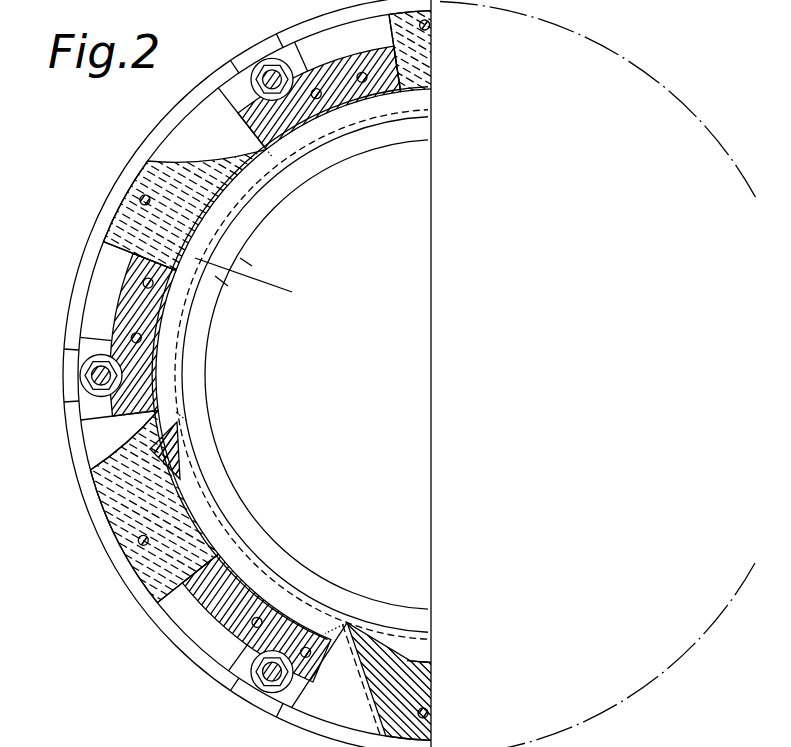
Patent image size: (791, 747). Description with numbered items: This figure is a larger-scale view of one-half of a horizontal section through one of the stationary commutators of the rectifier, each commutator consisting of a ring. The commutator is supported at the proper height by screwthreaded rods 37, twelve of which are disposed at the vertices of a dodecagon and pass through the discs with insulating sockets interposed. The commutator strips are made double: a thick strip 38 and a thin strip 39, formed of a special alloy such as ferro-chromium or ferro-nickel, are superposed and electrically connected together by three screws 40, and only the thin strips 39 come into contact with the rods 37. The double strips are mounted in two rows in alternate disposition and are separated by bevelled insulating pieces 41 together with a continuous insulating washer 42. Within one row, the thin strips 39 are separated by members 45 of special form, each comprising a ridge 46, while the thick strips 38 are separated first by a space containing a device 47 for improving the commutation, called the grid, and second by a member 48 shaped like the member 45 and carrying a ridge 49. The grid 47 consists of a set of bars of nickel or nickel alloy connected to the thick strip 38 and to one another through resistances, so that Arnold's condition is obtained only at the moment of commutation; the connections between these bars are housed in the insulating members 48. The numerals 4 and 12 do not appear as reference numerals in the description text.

The section line 4- 4 is at (105, 178).
The outer rim ring 12 is at (75, 468).
The screwthreaded rod 37 is at (84, 372).
The thick strip 38 is at (110, 290).
The thin strip 39 is at (258, 252).
The screw 40 is at (152, 345).
The bevelled insulating piece 41 is at (222, 282).
The insulating washer 42 is at (124, 441).
The member 45 is at (182, 372).
The ridge 46 is at (200, 405).
The device for improving the commutation 47 is at (265, 155).
The member 48 is at (138, 188).
The ridge 49 is at (184, 418).